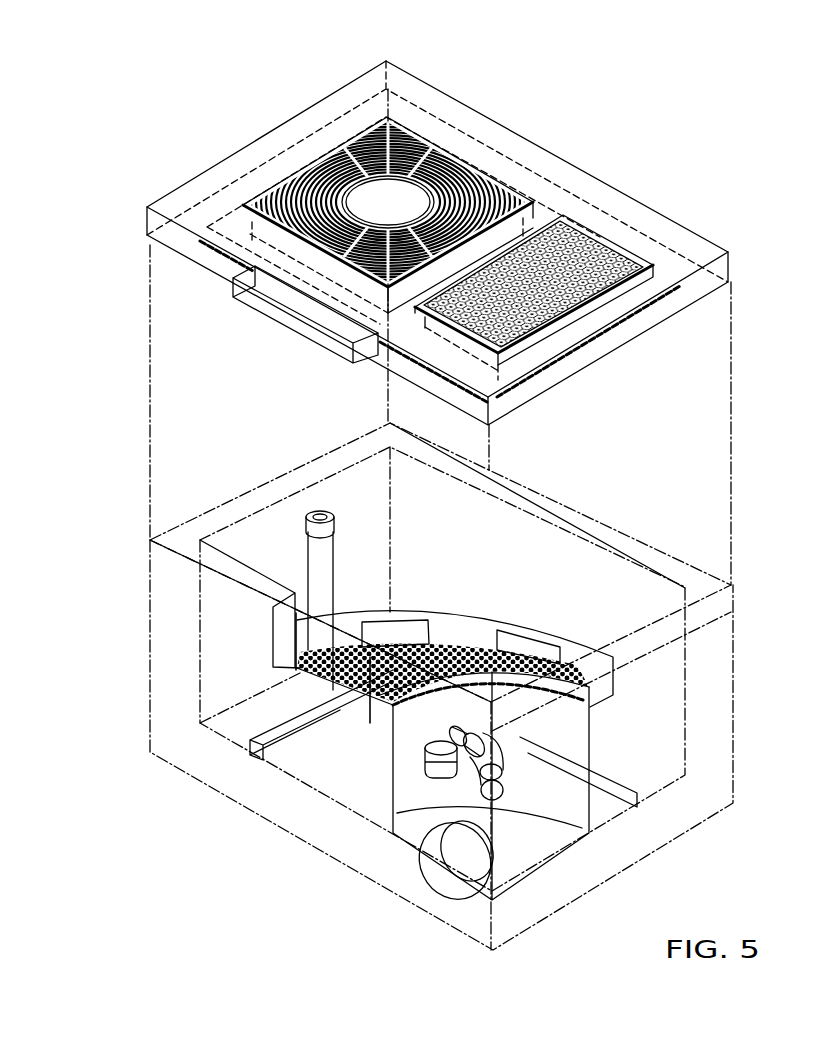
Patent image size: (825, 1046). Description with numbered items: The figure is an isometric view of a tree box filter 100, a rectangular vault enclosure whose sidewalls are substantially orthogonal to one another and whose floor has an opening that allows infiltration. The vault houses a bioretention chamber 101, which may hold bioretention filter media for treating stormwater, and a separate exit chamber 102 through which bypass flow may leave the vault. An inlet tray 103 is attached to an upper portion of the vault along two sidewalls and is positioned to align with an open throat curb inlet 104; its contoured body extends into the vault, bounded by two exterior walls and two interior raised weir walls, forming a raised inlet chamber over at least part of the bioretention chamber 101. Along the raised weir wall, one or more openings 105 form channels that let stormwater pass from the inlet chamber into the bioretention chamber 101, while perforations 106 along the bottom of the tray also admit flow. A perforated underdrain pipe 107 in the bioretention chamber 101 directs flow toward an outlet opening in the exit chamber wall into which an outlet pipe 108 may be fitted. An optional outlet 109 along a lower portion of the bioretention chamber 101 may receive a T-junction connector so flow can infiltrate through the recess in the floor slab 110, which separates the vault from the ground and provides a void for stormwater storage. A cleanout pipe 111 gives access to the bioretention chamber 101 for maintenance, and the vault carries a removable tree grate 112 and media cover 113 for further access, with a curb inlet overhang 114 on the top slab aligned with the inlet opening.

The tree box filter 100 is at (670, 90).
The bioretention chamber 101 is at (518, 492).
The exit chamber 102 is at (395, 833).
The inlet tray 103 is at (460, 612).
The open throat curb inlet 104 is at (273, 643).
The openings 105 is at (393, 613).
The perforations 106 is at (497, 650).
The perforated underdrain pipe 107 is at (395, 703).
The outlet pipe 108 is at (445, 880).
The outlet 109 is at (420, 775).
The floor slab 110 is at (250, 746).
The cleanout pipe 111 is at (307, 517).
The tree grate 112 is at (392, 130).
The media cover 113 is at (600, 228).
The curb inlet overhang 114 is at (238, 298).